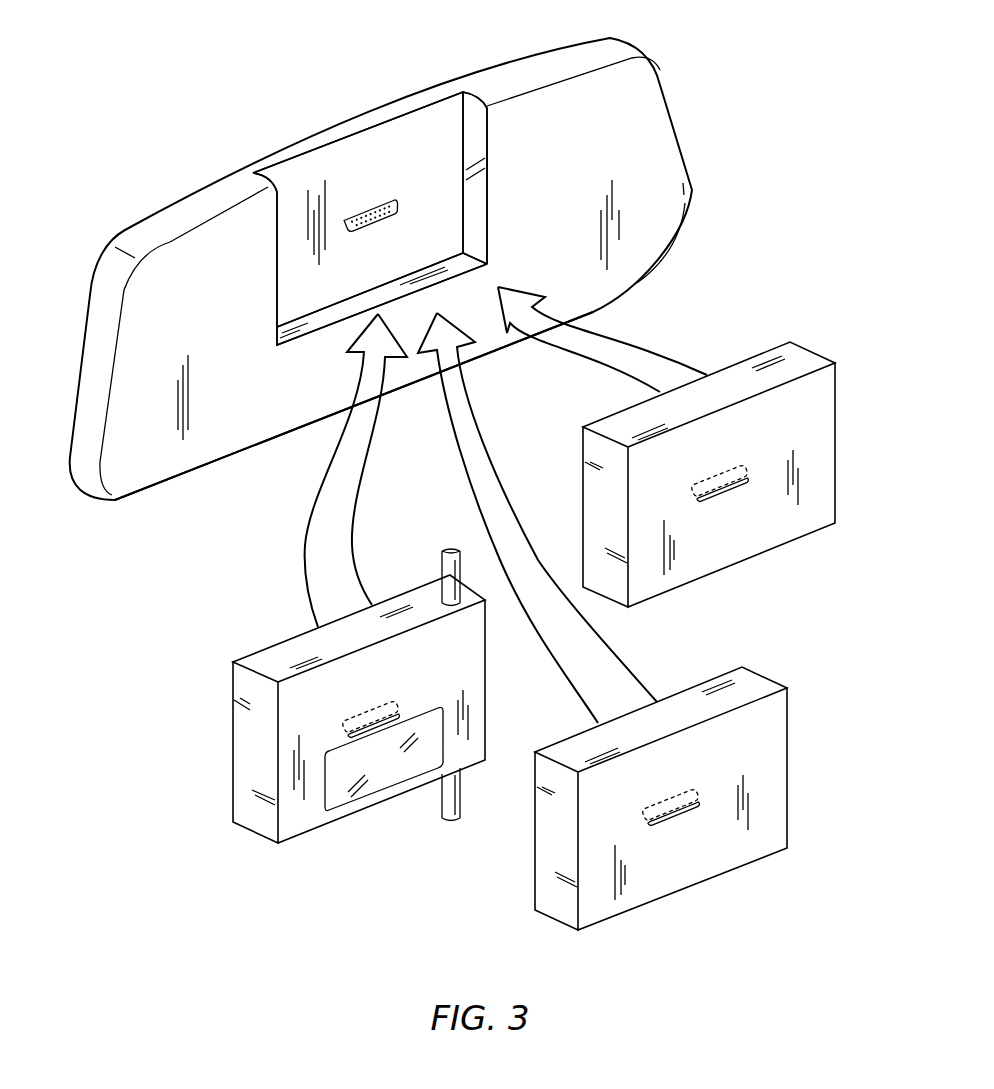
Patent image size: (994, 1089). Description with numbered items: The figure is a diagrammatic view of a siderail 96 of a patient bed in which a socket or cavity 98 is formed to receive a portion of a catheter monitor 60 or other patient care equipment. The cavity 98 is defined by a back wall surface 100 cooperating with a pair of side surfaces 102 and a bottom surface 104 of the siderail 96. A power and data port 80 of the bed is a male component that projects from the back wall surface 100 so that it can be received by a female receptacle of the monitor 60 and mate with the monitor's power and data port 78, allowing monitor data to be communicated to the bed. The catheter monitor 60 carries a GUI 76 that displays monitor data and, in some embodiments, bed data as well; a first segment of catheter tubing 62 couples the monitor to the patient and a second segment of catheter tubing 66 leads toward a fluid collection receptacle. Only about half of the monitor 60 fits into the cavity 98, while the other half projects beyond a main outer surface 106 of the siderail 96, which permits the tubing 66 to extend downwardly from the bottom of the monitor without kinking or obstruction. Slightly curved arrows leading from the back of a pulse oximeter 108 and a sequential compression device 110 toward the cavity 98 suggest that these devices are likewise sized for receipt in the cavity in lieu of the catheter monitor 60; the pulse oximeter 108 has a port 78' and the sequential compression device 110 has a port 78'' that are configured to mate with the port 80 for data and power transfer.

The catheter monitor 60 is at (250, 742).
The first segment of catheter tubing 62 is at (447, 565).
The second segment of catheter tubing 66 is at (452, 795).
The GUI 76 is at (337, 777).
The power & data port 78 is at (346, 718).
The port 78' is at (695, 821).
The port 78'' is at (743, 494).
The power & data port 80 is at (380, 205).
The siderail 96 is at (643, 132).
The cavity 98 is at (420, 147).
The back wall surface 100 is at (440, 180).
The side surfaces 102 is at (290, 243).
The bottom surface 104 is at (328, 315).
The main outer surface 106 is at (212, 440).
The pulse oximeter 108 is at (660, 882).
The sequential compression device 110 is at (720, 557).